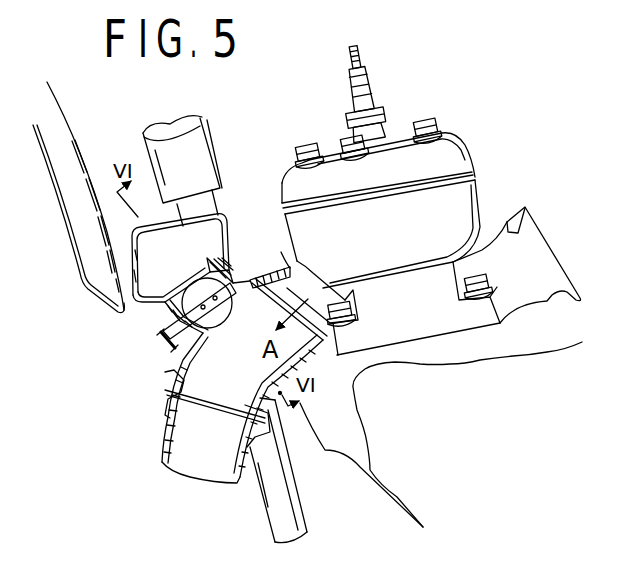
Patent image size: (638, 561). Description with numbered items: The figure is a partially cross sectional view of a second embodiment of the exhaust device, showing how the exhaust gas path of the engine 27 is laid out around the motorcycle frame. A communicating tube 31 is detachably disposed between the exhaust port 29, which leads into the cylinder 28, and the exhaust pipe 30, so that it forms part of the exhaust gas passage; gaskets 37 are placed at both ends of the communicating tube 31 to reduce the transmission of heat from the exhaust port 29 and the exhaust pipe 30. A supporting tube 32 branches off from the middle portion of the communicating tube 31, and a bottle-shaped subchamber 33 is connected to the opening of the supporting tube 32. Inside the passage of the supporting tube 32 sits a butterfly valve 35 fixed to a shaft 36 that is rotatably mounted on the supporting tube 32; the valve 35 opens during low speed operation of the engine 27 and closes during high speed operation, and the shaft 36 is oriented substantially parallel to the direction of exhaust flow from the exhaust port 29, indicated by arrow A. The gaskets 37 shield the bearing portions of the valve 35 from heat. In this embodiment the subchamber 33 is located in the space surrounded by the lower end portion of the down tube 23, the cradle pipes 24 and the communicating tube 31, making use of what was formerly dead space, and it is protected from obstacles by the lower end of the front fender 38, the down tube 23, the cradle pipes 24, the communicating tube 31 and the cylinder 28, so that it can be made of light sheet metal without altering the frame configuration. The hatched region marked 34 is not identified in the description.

The down tube 23 is at (213, 152).
The cradle pipes 24 is at (270, 508).
The engine 27 is at (485, 152).
The cylinder 28 is at (472, 222).
The exhaust port 29 is at (284, 266).
The exhaust pipe 30 is at (162, 440).
The communicating tube 31 is at (166, 366).
The supporting tube 32 is at (168, 316).
The subchamber 33 is at (213, 232).
The rubber cushion 34 is at (226, 275).
The valve 35 is at (206, 328).
The shaft 36 is at (162, 339).
The gasket 37 is at (264, 290).
The front fender 38 is at (87, 265).